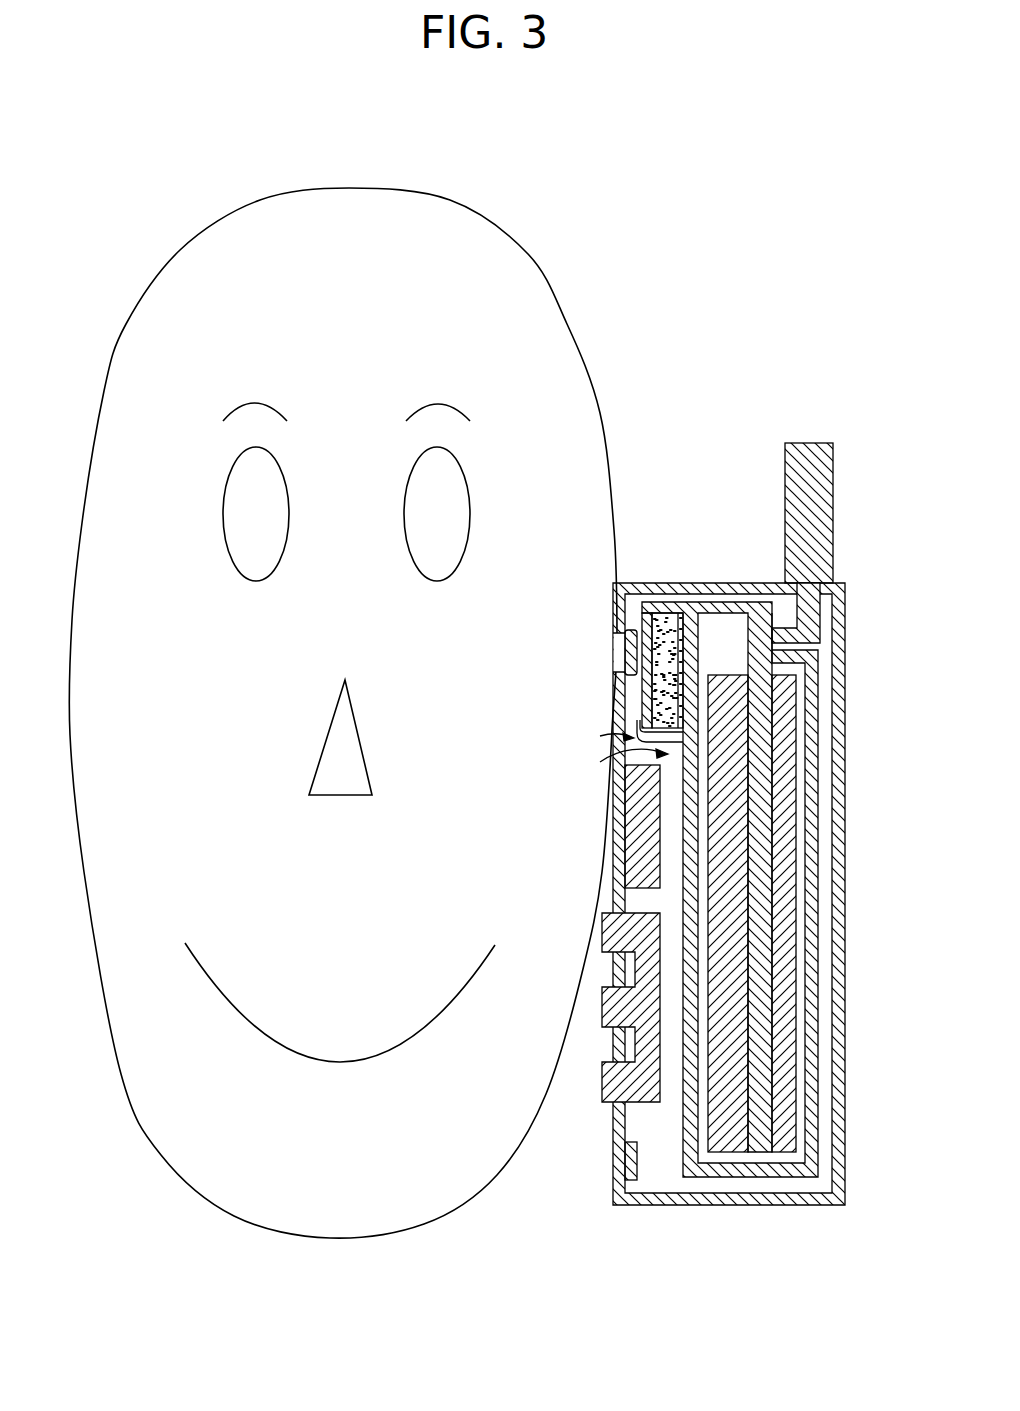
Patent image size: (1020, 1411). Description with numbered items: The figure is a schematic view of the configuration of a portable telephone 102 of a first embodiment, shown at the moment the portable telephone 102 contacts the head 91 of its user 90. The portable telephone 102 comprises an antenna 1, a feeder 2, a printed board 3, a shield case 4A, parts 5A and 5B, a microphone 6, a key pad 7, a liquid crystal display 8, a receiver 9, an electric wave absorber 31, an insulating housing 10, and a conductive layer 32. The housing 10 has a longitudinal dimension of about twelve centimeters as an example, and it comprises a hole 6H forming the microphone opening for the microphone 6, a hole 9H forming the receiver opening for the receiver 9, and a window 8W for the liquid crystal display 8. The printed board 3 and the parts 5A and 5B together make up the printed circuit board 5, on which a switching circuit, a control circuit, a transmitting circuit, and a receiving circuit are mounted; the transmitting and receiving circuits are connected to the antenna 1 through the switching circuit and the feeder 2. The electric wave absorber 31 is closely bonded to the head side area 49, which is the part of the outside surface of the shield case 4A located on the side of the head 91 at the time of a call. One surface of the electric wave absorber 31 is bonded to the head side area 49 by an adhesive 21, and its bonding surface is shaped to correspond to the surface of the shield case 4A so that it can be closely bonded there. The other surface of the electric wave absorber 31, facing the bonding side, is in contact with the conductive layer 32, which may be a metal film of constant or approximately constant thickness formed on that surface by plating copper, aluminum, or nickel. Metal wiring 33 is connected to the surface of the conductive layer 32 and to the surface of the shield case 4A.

The user 90 is at (531, 250).
The head 91 is at (541, 322).
The portable telephone 102 is at (723, 458).
The antenna 1 is at (810, 443).
The feeder 2 is at (783, 626).
The printed board 3 is at (755, 642).
The shield case 4A is at (807, 1170).
The printed circuit board 5 is at (738, 992).
The part 5A is at (727, 1137).
The part 5B is at (780, 1127).
The microphone 6 is at (643, 1195).
The hole 6H is at (625, 1160).
The key pad 7 is at (620, 1085).
The liquid crystal display 8 is at (640, 855).
The window 8W is at (622, 824).
The receiver 9 is at (625, 640).
The hole 9H is at (613, 650).
The insulating housing 10 is at (614, 1190).
The adhesive 21 is at (688, 612).
The electric wave absorber 31 is at (662, 613).
The conductive layer 32 is at (650, 610).
The metal wiring 33 is at (600, 736).
The head side area 49 is at (600, 762).